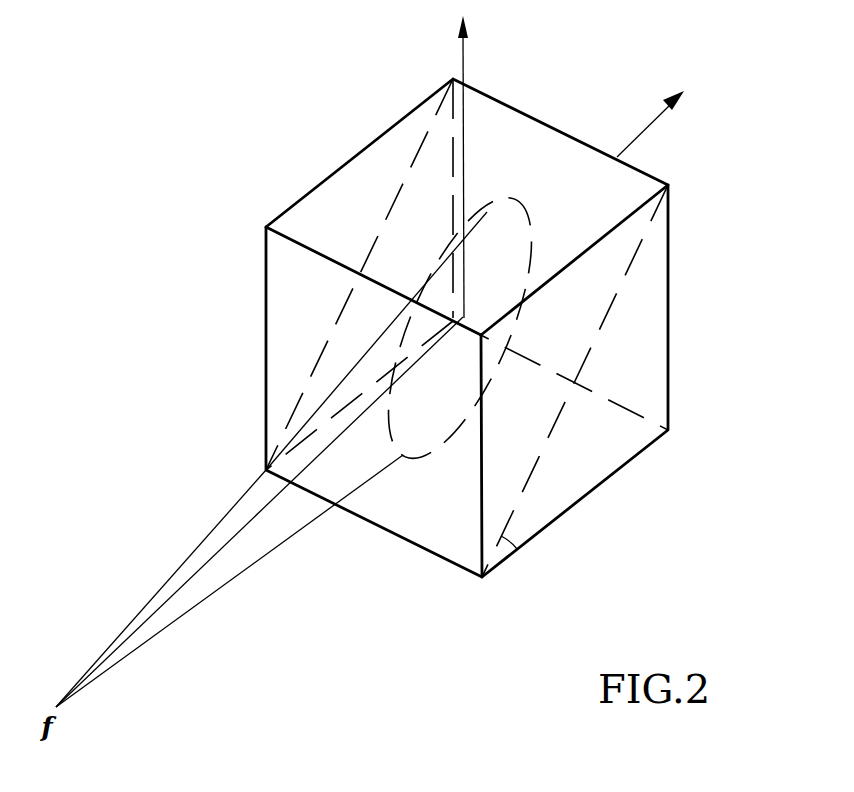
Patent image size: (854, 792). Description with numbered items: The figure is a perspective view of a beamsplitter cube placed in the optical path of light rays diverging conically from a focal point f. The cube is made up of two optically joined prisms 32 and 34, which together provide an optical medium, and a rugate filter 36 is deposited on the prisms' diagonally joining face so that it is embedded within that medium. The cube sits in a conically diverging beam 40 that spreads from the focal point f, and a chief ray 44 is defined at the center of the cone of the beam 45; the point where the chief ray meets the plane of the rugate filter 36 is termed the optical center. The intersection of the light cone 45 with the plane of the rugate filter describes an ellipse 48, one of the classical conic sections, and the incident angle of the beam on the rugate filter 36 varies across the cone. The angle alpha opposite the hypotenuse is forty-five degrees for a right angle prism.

The prism 32 is at (618, 255).
The prism 34 is at (643, 372).
The rugate filter 36 is at (546, 391).
The conically diverging beam 40 is at (193, 603).
The chief ray 44 is at (267, 503).
The light cone 45 is at (122, 553).
The ellipse 48 is at (488, 212).